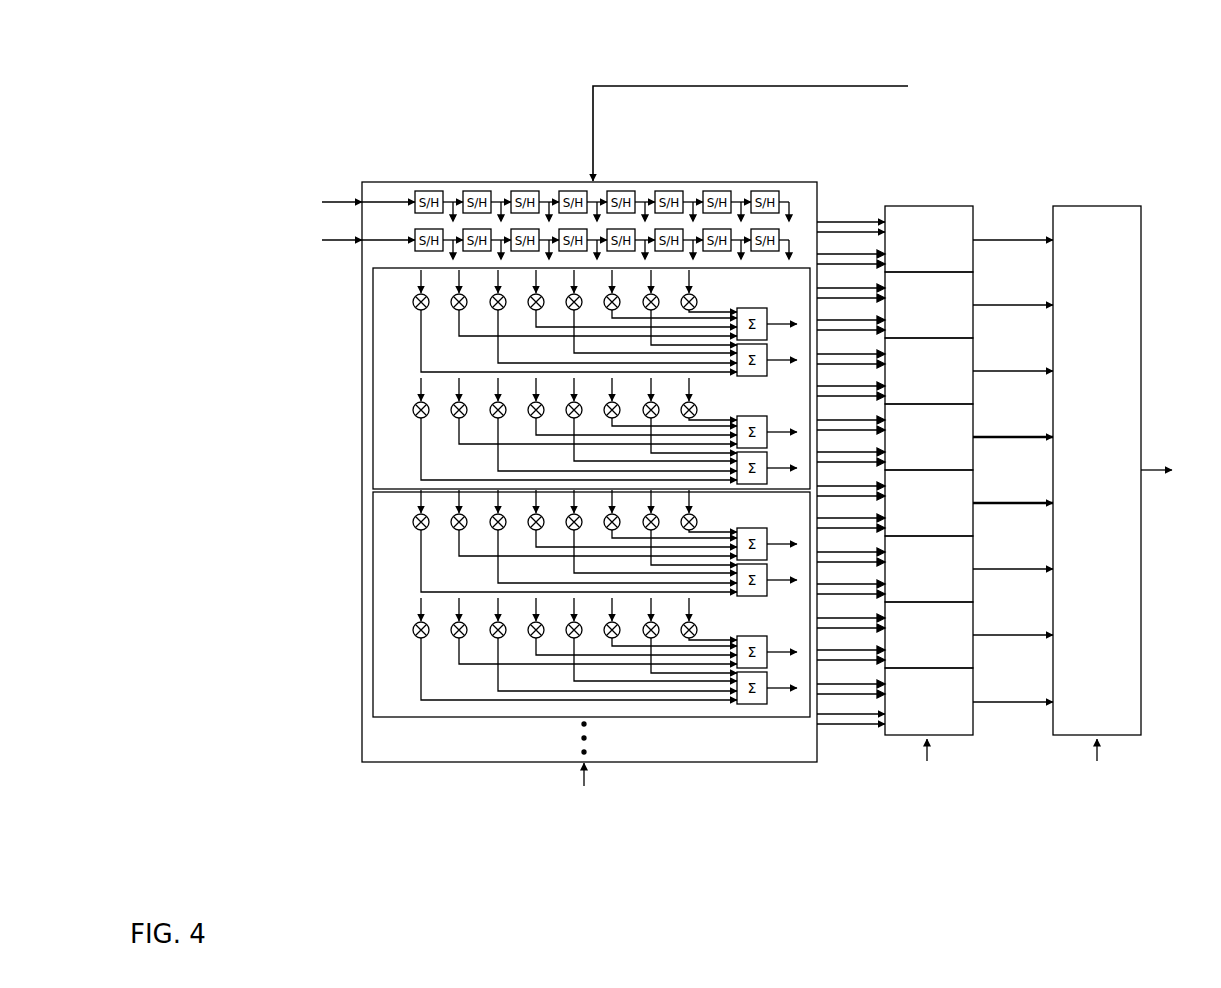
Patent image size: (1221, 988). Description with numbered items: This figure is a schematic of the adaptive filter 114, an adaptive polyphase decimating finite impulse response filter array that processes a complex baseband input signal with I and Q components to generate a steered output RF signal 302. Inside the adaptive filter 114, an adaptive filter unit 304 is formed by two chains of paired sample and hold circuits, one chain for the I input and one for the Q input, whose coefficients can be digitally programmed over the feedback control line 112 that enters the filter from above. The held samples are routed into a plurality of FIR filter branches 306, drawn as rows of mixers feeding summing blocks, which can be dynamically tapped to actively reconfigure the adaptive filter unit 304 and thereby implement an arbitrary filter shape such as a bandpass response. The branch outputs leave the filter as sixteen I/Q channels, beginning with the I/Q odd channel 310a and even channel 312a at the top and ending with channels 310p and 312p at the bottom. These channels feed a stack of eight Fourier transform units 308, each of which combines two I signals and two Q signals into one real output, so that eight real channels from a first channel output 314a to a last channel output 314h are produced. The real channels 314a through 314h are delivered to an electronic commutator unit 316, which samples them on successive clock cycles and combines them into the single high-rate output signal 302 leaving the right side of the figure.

The feedback control line 112 is at (835, 86).
The adaptive filter 114 is at (333, 178).
The steered output RF signal 302 is at (1175, 470).
The adaptive filter unit 304 is at (536, 180).
The FIR filter branches 306 is at (412, 353).
The Fourier transform units 308 is at (948, 205).
The I/Q odd channel 310a is at (841, 214).
The I/Q odd channel 310p is at (849, 700).
The I/Q even channel 312a is at (851, 247).
The I/Q even channel 312p is at (865, 730).
The first channel output 314a is at (1017, 236).
The last channel output 314h is at (992, 709).
The electronic commutator unit 316 is at (1138, 205).